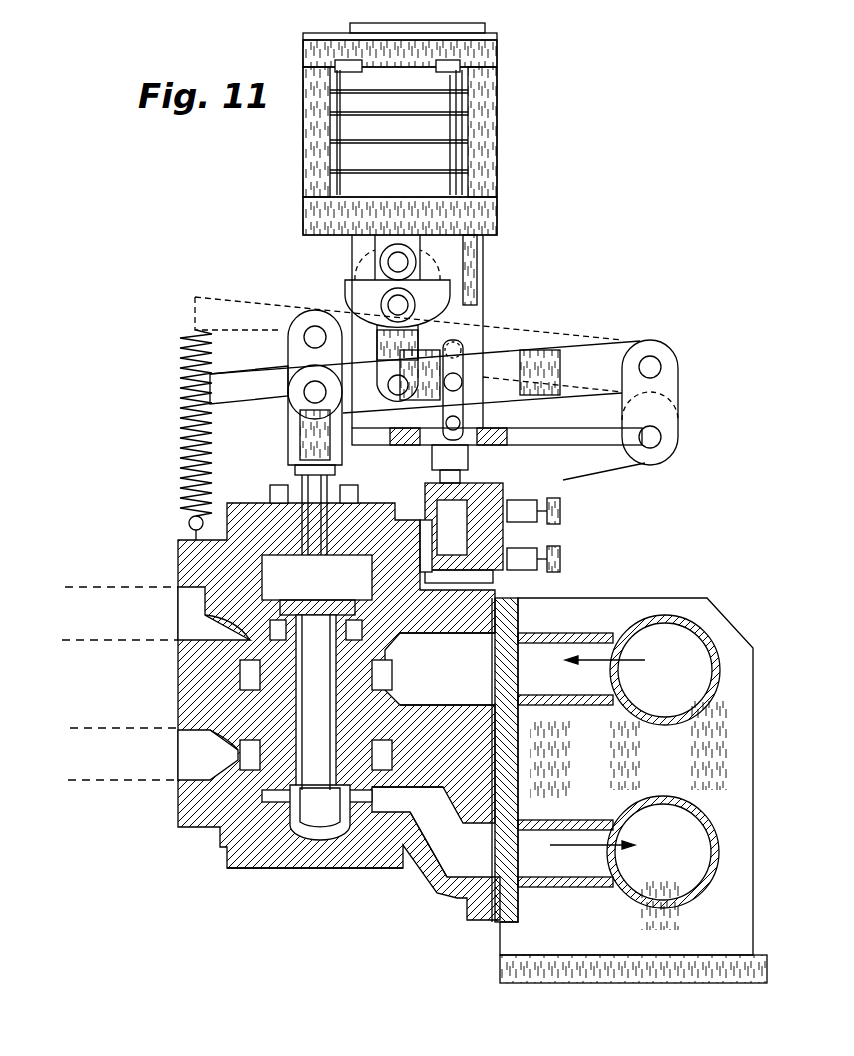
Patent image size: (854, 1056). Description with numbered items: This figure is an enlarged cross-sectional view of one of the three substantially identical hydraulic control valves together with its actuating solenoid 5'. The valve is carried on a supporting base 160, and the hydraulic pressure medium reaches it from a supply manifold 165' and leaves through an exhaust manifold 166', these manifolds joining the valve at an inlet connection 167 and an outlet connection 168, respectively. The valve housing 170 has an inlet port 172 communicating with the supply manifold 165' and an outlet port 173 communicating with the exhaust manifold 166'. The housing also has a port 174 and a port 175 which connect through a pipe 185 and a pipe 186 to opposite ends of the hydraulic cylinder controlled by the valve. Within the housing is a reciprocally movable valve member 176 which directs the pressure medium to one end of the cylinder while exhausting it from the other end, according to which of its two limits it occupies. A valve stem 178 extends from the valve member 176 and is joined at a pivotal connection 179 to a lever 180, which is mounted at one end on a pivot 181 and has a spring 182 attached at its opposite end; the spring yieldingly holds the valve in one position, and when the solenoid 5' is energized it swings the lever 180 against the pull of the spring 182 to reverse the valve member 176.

The solenoid 5' is at (422, 129).
The supporting base 160 is at (607, 975).
The supply manifold 165' is at (691, 653).
The exhaust manifold 166' is at (706, 844).
The inlet connection 167 is at (572, 642).
The outlet connection 168 is at (575, 818).
The valve housing 170 is at (190, 686).
The inlet port 172 is at (530, 605).
The outlet port 173 is at (440, 848).
The port 174 is at (190, 620).
The port 175 is at (195, 742).
The valve member 176 is at (232, 852).
The valve stem 178 is at (296, 472).
The pivotal connection 179 is at (315, 390).
The lever 180 is at (525, 357).
The pivot 181 is at (652, 366).
The spring 182 is at (186, 455).
The pipe 185 is at (114, 592).
The pipe 186 is at (152, 782).